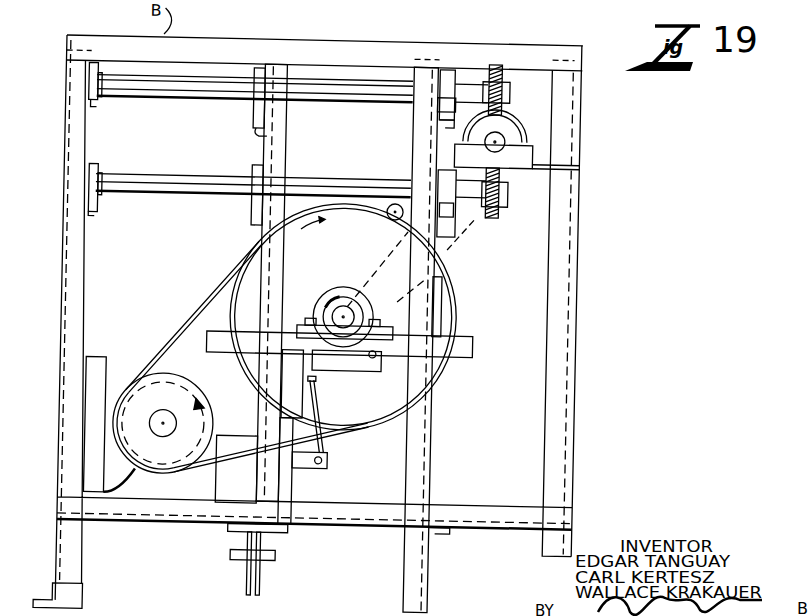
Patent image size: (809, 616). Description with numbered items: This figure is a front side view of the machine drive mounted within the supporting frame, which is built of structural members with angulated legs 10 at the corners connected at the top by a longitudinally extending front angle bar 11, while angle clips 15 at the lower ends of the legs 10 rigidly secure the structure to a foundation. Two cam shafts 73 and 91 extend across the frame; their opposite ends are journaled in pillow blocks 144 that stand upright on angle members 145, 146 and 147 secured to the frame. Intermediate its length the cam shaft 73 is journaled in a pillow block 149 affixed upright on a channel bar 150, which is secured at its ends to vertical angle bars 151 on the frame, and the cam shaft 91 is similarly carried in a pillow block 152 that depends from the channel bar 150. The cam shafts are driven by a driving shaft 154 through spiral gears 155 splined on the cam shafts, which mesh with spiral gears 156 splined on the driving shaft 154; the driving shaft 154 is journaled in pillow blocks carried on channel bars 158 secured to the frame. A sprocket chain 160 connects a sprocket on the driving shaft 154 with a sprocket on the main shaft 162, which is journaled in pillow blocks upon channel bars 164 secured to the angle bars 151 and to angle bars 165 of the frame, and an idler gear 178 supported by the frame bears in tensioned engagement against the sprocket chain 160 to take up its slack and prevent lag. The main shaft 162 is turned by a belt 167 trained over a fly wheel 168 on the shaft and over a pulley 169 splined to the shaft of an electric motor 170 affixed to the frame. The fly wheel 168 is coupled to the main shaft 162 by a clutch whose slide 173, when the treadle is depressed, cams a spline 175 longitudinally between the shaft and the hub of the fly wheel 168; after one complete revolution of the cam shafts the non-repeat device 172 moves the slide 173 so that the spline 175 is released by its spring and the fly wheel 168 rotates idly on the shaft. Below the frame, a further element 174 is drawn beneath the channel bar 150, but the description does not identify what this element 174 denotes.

The angulated legs 10 is at (71, 318).
The front angle bar 11 is at (473, 42).
The angle clips 15 is at (79, 598).
The cam shaft 73 is at (182, 78).
The cam shaft 91 is at (179, 196).
The pillow blocks 144 is at (89, 77).
The angle member 145 is at (93, 101).
The angle member 146 is at (440, 117).
The angle member 147 is at (96, 214).
The pillow blocks 149 is at (255, 102).
The channel bar 150 is at (286, 136).
The vertical angle bars 151 is at (300, 485).
The pillow block 152 is at (256, 206).
The driving shaft 154 is at (508, 133).
The spiral gears 155 is at (504, 56).
The spiral gears 156 is at (527, 115).
The channel bars 158 is at (581, 155).
The sprocket chain 160 is at (381, 256).
The main shaft 162 is at (349, 306).
The channel bars 164 is at (471, 346).
The angle bars 165 is at (439, 459).
The belt 167 is at (204, 305).
The fly wheel 168 is at (449, 312).
The pulley 169 is at (174, 380).
The electric motor 170 is at (102, 452).
The non-repeat device 172 is at (283, 433).
The slide 173 is at (383, 362).
The support legs 174 is at (281, 558).
The spline 175 is at (378, 306).
The idler gear 178 is at (389, 191).